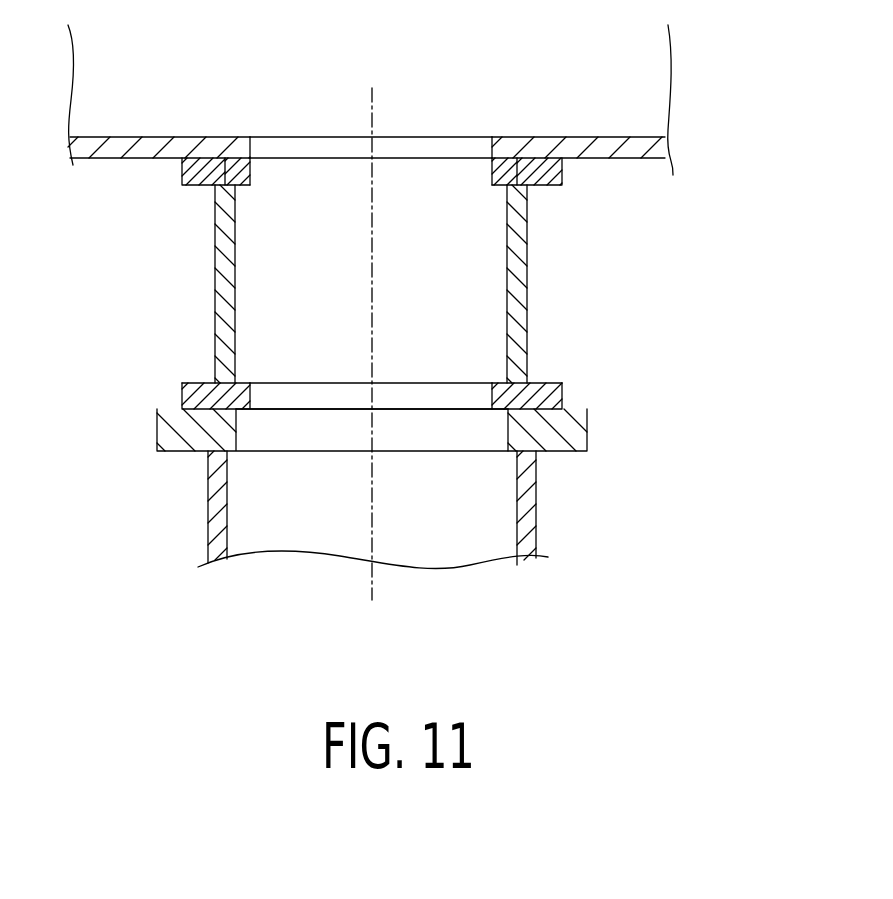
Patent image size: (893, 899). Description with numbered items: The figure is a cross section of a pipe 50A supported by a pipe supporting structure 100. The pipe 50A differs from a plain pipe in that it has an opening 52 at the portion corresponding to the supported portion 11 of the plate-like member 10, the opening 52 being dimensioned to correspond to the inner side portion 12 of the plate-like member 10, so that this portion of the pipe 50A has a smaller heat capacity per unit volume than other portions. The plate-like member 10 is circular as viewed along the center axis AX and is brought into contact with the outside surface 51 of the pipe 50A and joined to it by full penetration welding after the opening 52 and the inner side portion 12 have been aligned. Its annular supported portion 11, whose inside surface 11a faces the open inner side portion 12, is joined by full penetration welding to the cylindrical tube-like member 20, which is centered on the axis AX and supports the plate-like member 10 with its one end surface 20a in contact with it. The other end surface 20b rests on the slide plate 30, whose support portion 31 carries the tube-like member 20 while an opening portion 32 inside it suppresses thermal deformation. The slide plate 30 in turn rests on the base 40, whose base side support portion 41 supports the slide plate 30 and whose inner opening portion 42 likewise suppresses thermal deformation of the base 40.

The plate-like member 10 is at (317, 212).
The supported portion 11 is at (537, 188).
The inside surface 11a is at (262, 158).
The inner side portion 12 is at (467, 172).
The tube-like member 20 is at (335, 213).
The one end surface 20a is at (226, 158).
The other end surface 20b is at (207, 383).
The slide plate 30 is at (358, 517).
The support portion 31 is at (554, 393).
The opening portion 32 is at (473, 400).
The base 40 is at (353, 534).
The base side support portion 41 is at (577, 428).
The opening portion 42 is at (415, 430).
The pipe 50A is at (415, 113).
The outside surface 51 is at (642, 158).
The opening 52 is at (408, 148).
The pipe supporting structure 100 is at (398, 340).
The center axis AX is at (372, 325).